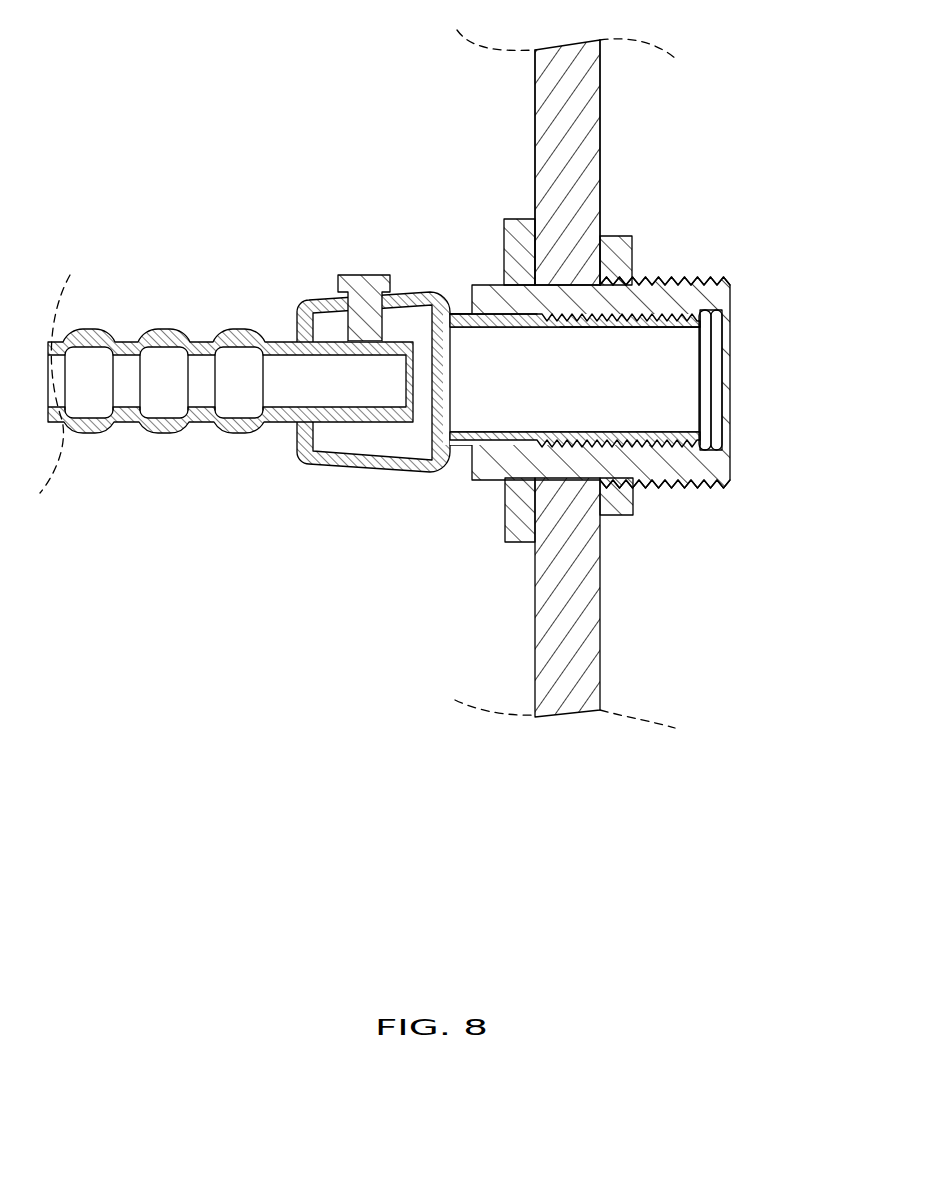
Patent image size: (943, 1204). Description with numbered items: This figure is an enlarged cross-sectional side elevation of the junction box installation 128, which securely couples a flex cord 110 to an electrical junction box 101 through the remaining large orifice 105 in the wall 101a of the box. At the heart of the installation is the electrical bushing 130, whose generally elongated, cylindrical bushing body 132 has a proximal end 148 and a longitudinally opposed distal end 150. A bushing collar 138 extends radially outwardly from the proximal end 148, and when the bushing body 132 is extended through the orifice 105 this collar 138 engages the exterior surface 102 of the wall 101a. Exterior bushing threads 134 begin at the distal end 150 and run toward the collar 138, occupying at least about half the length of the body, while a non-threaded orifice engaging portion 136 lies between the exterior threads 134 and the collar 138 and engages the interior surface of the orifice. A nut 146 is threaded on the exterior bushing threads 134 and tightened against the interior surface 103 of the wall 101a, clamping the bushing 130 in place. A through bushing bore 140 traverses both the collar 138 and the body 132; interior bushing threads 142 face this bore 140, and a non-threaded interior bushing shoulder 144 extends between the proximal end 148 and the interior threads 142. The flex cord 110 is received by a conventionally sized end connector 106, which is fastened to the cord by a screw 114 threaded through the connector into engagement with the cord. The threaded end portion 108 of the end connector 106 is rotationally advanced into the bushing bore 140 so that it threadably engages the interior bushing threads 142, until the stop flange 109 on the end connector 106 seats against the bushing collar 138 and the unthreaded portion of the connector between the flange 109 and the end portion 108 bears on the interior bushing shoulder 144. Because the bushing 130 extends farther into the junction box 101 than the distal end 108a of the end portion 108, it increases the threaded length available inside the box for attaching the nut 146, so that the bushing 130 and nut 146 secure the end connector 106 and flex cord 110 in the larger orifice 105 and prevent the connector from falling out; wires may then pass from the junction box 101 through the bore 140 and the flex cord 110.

The electrical junction box 101 is at (567, 379).
The wall of the junction box 101a is at (577, 108).
The exterior surface 102 is at (535, 128).
The interior surface 103 is at (600, 135).
The orifice 105 is at (617, 482).
The end connector 106 is at (368, 472).
The threaded end portion 108 is at (649, 382).
The distal end 108a is at (700, 412).
The stop flange 109 is at (490, 480).
The flex cord 110 is at (174, 433).
The screw 114 is at (362, 274).
The junction box installation 128 is at (444, 367).
The electrical bushing 130 is at (565, 389).
The bushing body 132 is at (656, 300).
The exterior bushing threads 134 is at (698, 482).
The non-threaded orifice engaging portion 136 is at (567, 283).
The bushing collar 138 is at (517, 540).
The bushing bore 140 is at (716, 385).
The interior bushing threads 142 is at (637, 326).
The interior bushing shoulder 144 is at (527, 315).
The nut 146 is at (620, 236).
The proximal end 148 is at (542, 276).
The distal end 150 is at (730, 300).